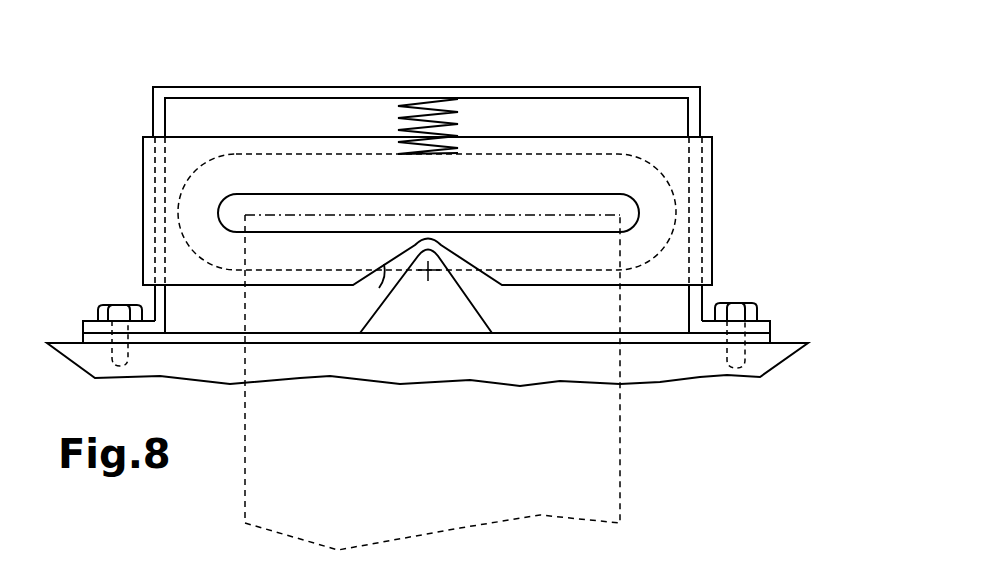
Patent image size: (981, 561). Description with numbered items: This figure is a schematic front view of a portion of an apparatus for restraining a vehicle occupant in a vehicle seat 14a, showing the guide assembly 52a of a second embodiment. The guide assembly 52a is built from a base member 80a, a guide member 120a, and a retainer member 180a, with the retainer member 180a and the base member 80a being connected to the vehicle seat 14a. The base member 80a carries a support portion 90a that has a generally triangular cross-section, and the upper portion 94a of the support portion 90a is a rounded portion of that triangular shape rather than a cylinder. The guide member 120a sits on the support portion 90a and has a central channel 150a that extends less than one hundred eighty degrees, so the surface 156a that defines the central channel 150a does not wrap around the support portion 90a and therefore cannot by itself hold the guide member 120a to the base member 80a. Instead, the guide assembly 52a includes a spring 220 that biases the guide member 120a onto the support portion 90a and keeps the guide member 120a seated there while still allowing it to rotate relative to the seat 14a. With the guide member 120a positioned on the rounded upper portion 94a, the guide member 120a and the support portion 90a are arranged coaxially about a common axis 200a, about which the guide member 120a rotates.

The guide assembly 52a is at (124, 117).
The retainer member 180a is at (292, 92).
The spring 220 is at (458, 120).
The central channel 150a is at (423, 243).
The upper portion 94a is at (436, 246).
The guide member 120a is at (286, 252).
The surface 156a is at (420, 246).
The support portion 90a is at (398, 305).
The common axis 200a is at (428, 274).
The base member 80a is at (632, 337).
The vehicle seat 14a is at (682, 358).